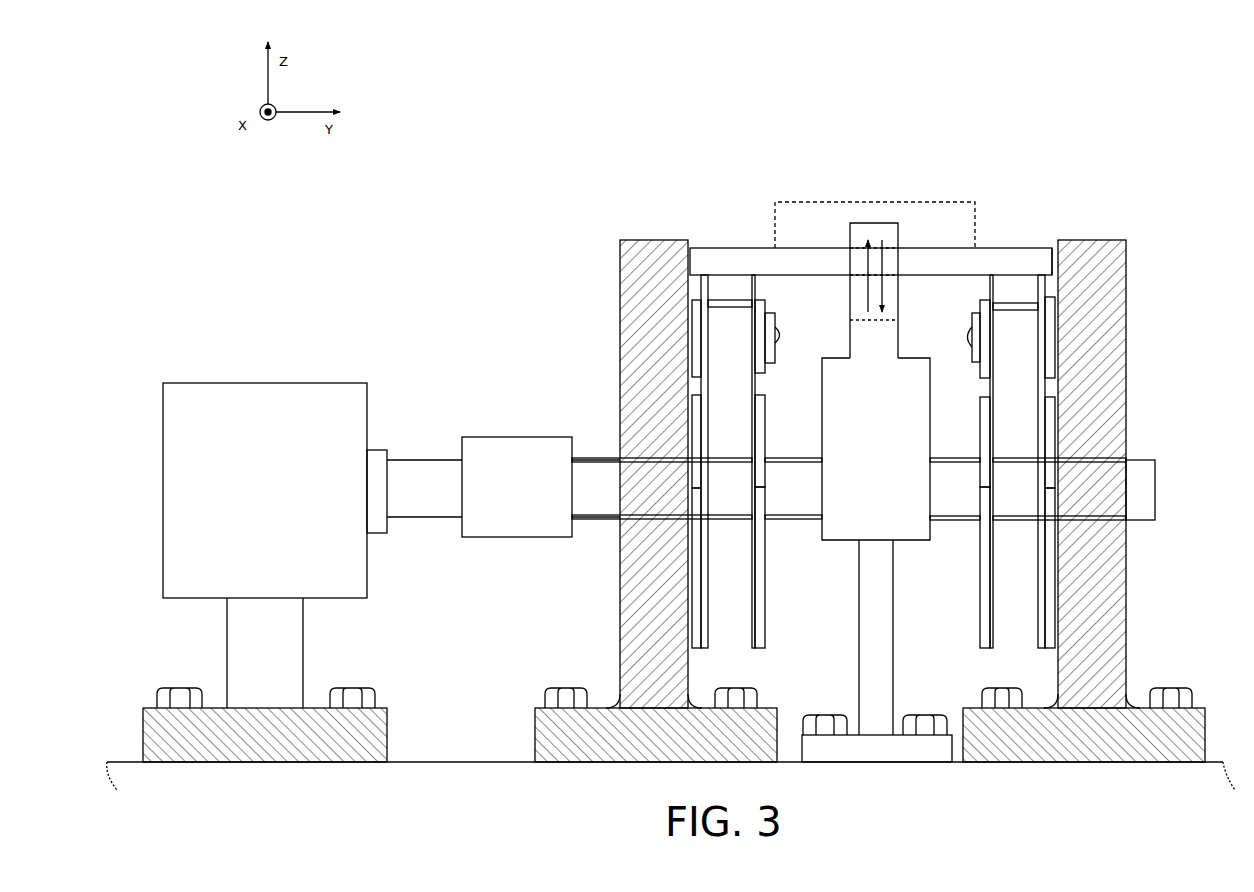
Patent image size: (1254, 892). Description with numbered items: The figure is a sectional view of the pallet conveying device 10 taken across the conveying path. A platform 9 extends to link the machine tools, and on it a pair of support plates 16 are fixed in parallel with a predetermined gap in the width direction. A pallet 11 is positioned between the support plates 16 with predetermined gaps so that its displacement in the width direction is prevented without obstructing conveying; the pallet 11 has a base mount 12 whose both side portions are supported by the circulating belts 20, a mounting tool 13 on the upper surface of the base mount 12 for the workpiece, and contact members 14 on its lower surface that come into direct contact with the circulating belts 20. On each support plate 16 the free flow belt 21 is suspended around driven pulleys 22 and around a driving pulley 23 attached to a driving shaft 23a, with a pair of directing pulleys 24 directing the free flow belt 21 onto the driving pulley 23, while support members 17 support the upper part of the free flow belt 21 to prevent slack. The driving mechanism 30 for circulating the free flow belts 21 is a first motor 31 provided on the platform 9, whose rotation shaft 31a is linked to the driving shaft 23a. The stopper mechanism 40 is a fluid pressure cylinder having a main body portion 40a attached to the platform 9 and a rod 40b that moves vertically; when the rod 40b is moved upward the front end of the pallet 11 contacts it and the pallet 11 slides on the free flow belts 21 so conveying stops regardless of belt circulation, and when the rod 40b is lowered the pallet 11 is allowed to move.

The platform 9 is at (447, 765).
The pallet conveying device 10 is at (671, 434).
The pallet 11 is at (993, 248).
The base mount 12 is at (1040, 248).
The mounting tool 13 is at (806, 200).
The contact member 14 is at (754, 280).
The support plate 16 is at (621, 600).
The support member 17 is at (773, 362).
The circulating belt 20 is at (863, 475).
The free flow belt 21 is at (750, 390).
The driven pulley 22 is at (703, 295).
The driving pulley 23 is at (863, 475).
The driving shaft 23a is at (788, 520).
The directing pulley 24 is at (762, 593).
The driving mechanism 30 is at (391, 487).
The first motor 31 is at (213, 383).
The rotation shaft 31a is at (423, 462).
The stopper mechanism 40 is at (877, 449).
The main body portion 40a is at (915, 540).
The rod 40b is at (857, 294).